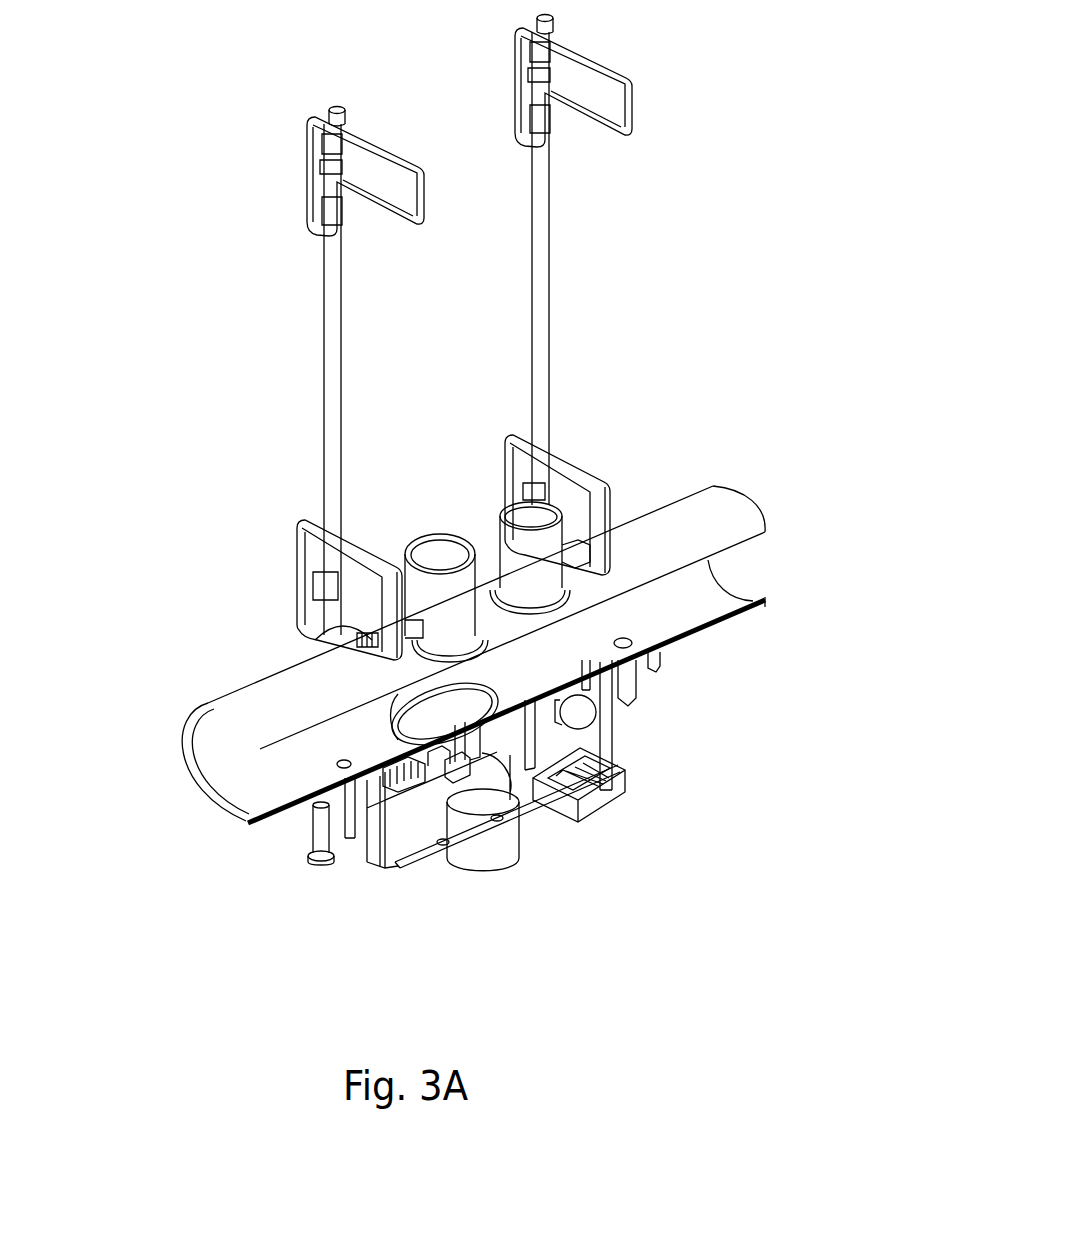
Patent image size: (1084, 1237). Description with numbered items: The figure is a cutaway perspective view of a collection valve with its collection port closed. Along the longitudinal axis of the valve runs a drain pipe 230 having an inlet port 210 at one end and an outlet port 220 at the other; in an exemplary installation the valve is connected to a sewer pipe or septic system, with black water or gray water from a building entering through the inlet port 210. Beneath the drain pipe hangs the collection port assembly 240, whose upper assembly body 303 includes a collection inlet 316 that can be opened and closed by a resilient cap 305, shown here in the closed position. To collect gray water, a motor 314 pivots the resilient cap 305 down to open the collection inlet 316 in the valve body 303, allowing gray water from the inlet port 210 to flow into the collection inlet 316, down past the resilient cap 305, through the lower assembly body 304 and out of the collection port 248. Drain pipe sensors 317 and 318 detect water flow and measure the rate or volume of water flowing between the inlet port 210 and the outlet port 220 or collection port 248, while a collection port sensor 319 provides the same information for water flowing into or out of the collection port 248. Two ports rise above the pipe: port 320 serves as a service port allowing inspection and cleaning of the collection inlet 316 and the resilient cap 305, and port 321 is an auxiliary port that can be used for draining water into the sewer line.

The inlet port 210 is at (204, 786).
The outlet port 220 is at (731, 579).
The drain pipe 230 is at (649, 527).
The collection port assembly 240 is at (692, 689).
The collection port 248 is at (471, 869).
The upper assembly body 303 is at (624, 697).
The lower assembly body 304 is at (392, 869).
The resilient cap 305 is at (418, 722).
The motor 314 is at (582, 715).
The collection inlet 316 is at (452, 768).
The drain pipe sensor 317 is at (378, 733).
The drain pipe sensor 318 is at (393, 753).
The collection port sensor 319 is at (518, 756).
The service port 320 is at (426, 536).
The auxiliary port 321 is at (509, 504).